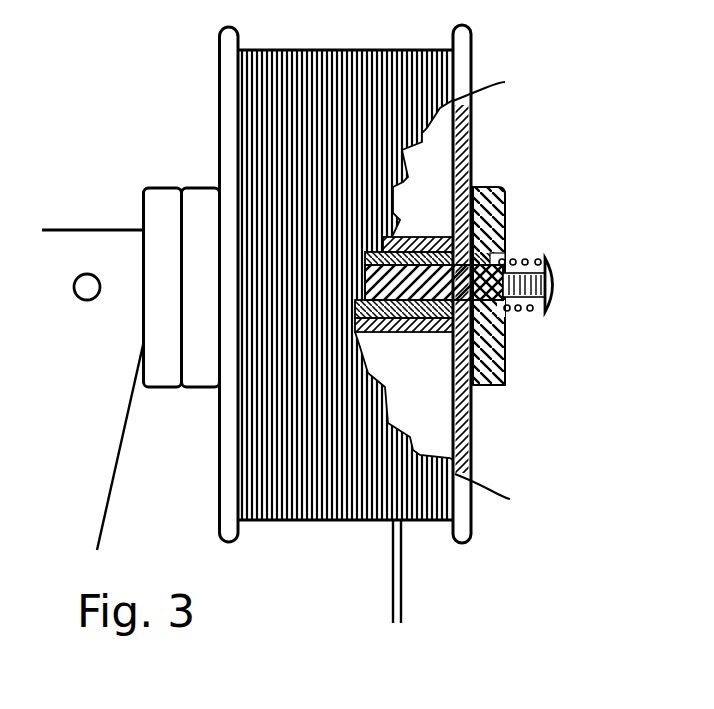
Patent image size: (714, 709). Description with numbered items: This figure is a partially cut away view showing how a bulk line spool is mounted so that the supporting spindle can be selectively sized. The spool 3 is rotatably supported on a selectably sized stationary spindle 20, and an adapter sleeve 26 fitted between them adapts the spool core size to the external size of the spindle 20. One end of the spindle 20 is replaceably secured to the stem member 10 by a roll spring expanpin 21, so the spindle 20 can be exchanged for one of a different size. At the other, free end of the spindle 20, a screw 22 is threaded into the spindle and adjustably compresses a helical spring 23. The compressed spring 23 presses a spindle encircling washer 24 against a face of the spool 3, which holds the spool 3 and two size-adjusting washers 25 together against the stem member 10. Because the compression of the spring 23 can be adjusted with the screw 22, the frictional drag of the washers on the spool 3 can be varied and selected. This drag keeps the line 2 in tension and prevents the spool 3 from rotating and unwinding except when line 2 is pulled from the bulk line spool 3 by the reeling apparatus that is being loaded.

The line 2 is at (399, 599).
The spool 3 is at (462, 517).
The stem member 10 is at (58, 253).
The spindle 20 is at (503, 260).
The roll spring expanpin 21 is at (83, 292).
The screw 22 is at (561, 289).
The helical spring 23 is at (530, 258).
The washer 24 is at (490, 186).
The size-adjusting washers 25 is at (155, 203).
The adapter sleeve 26 is at (412, 333).